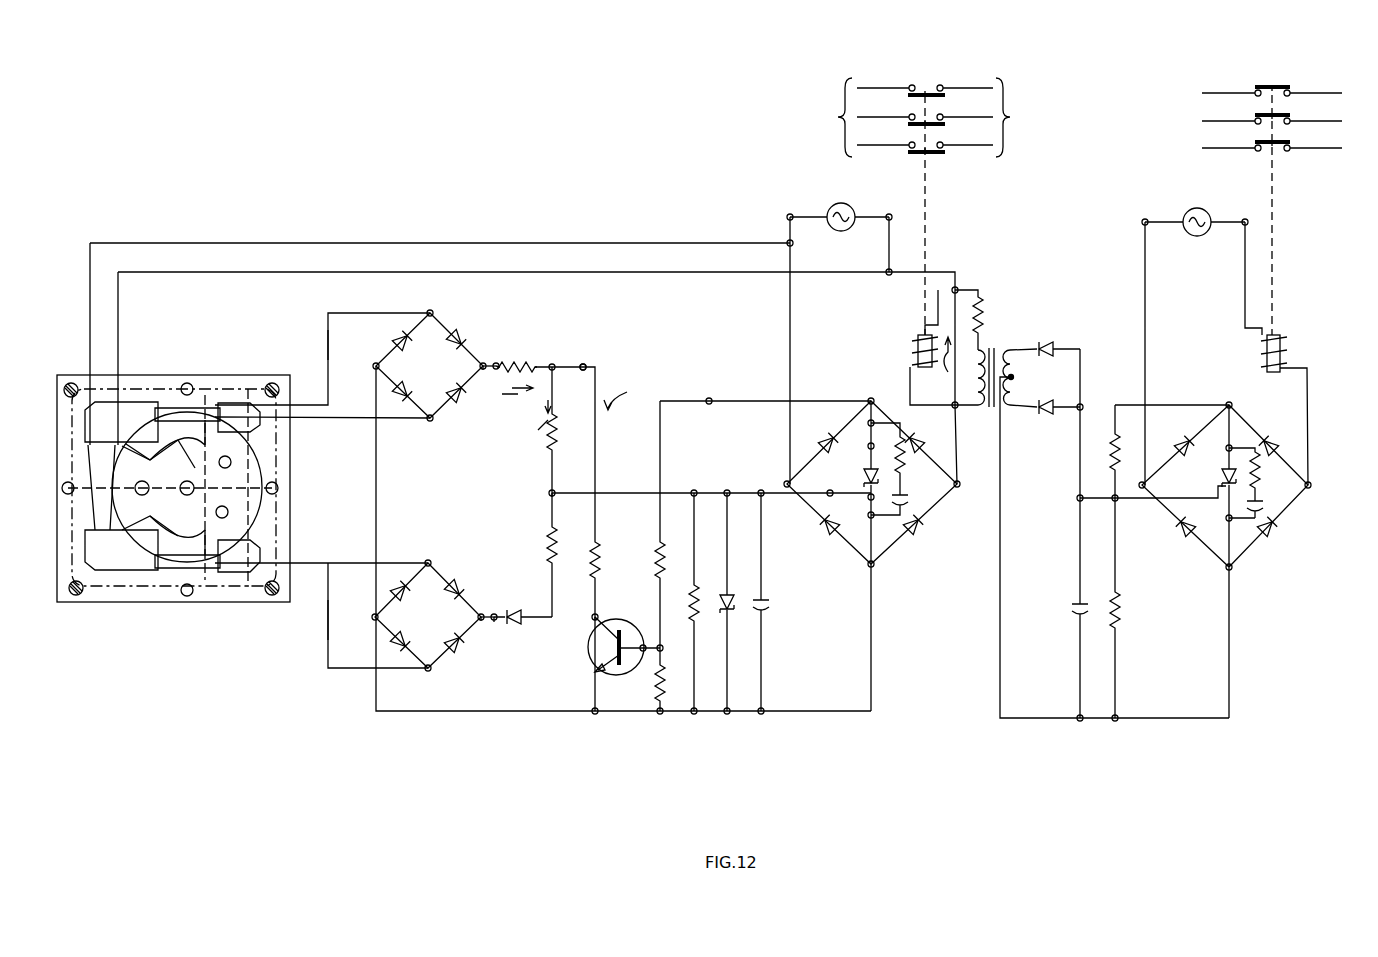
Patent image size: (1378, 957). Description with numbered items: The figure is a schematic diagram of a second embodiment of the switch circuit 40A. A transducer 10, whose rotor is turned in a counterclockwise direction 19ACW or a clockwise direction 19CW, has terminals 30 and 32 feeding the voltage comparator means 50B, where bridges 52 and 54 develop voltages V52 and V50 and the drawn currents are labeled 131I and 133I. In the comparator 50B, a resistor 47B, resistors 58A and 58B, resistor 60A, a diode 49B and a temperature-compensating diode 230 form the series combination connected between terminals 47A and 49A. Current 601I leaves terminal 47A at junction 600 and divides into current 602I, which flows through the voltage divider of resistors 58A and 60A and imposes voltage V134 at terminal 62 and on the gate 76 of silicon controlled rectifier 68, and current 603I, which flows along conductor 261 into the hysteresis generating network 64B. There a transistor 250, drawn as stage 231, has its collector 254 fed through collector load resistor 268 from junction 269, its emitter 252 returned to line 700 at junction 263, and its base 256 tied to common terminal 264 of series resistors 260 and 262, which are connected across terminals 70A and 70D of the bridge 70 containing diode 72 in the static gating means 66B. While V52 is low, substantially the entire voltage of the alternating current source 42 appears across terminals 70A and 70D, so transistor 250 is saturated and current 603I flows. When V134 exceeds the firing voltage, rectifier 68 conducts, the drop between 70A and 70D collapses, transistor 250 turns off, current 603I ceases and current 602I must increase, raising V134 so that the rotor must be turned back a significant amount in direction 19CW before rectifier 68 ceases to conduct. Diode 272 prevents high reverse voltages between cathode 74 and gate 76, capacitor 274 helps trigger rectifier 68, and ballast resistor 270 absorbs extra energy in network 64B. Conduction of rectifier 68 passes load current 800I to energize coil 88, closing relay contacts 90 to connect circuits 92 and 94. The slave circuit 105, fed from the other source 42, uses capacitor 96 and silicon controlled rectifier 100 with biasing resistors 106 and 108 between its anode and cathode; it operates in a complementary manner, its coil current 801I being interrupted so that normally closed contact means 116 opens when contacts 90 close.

The transducer 10 is at (158, 367).
The counterclockwise direction 19ACW is at (180, 468).
The clockwise direction 19CW is at (195, 468).
The upper terminal 30 is at (222, 418).
The lower terminal 32 is at (155, 563).
The control circuit 40A is at (648, 122).
The alternating current source of voltage 42 is at (829, 207).
The junction point or terminal 47A is at (484, 363).
The resistor 47B is at (500, 365).
The terminal 49A is at (485, 613).
The diode 49B is at (504, 616).
The voltage comparator means 50B is at (466, 770).
The bridge rectifier 52 is at (409, 368).
The bridge rectifier 54 is at (409, 618).
The resistor 58A is at (545, 450).
The resistor 58B is at (553, 365).
The resistor 60A is at (545, 548).
The terminal or junction point 62 is at (556, 491).
The hysteresis generating means 64B is at (638, 770).
The static gating means 66B is at (884, 755).
The silicon controlled rectifier 68 is at (864, 475).
The bridge rectifier 70 is at (948, 487).
The terminal 70A is at (868, 396).
The terminal 70D is at (875, 566).
The diode 72 is at (838, 432).
The cathode 74 is at (870, 505).
The gate 76 is at (828, 493).
The coil 88 is at (918, 332).
The relay contact means 90 is at (910, 70).
The electrical circuit 92 is at (827, 117).
The electrical circuit 94 is at (1012, 117).
The capacitor or second voltage boosting means 96 is at (1070, 607).
The second silicon controlled rectifier or slaved switching means 100 is at (1222, 476).
The slave circuit 105 is at (1078, 758).
The biasing resistor 106 is at (1113, 442).
The biasing resistor 108 is at (1124, 612).
The normally closed contact means 116 is at (1283, 73).
The current 131I is at (312, 364).
The current 133I is at (314, 594).
The voltage V52 is at (470, 398).
The voltage V50 is at (470, 648).
The voltage V134 is at (548, 497).
The junction 600 is at (587, 366).
The current 601I is at (502, 397).
The current 602I is at (519, 415).
The current 603I is at (633, 392).
The diode 230 is at (508, 632).
The transistor 231 is at (560, 663).
The semiconductor transistor 250 is at (592, 660).
The emitter 252 is at (600, 668).
The collector 254 is at (600, 616).
The base 256 is at (645, 660).
The resistor 260 is at (655, 570).
The conductor 261 is at (677, 480).
The resistor 262 is at (655, 694).
The junction 263 is at (662, 714).
The common terminal 264 is at (663, 648).
The collector load resistor 268 is at (604, 548).
The junction 269 is at (712, 400).
The ballast resistor 270 is at (692, 592).
The diode 272 is at (740, 602).
The capacitor 274 is at (772, 606).
The return conductor or line 700 is at (384, 714).
The load current 800I is at (934, 363).
The current 801I is at (1300, 349).